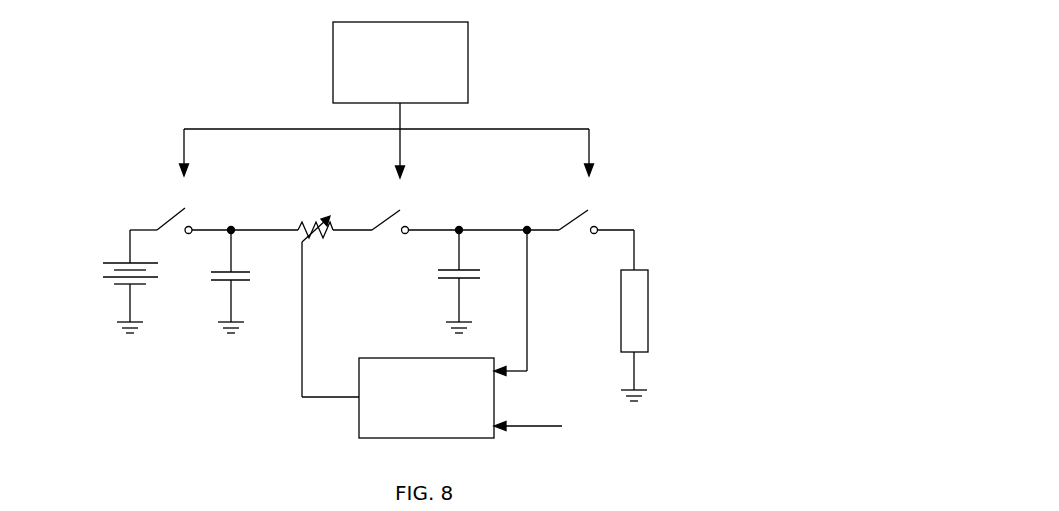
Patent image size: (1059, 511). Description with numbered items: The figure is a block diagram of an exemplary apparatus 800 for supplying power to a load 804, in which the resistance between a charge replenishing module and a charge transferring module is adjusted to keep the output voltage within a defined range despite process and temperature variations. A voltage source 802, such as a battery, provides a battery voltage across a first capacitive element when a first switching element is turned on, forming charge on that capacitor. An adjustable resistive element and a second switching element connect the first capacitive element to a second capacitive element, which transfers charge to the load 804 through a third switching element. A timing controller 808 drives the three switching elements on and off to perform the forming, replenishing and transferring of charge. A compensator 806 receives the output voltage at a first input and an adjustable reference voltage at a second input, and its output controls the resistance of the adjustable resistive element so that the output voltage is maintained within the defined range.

The apparatus 800 is at (657, 52).
The voltage source 802 is at (117, 260).
The load 804 is at (646, 268).
The compensator 806 is at (425, 358).
The timing controller 808 is at (333, 62).